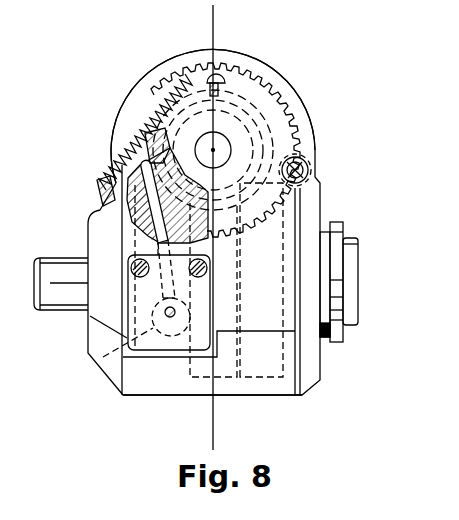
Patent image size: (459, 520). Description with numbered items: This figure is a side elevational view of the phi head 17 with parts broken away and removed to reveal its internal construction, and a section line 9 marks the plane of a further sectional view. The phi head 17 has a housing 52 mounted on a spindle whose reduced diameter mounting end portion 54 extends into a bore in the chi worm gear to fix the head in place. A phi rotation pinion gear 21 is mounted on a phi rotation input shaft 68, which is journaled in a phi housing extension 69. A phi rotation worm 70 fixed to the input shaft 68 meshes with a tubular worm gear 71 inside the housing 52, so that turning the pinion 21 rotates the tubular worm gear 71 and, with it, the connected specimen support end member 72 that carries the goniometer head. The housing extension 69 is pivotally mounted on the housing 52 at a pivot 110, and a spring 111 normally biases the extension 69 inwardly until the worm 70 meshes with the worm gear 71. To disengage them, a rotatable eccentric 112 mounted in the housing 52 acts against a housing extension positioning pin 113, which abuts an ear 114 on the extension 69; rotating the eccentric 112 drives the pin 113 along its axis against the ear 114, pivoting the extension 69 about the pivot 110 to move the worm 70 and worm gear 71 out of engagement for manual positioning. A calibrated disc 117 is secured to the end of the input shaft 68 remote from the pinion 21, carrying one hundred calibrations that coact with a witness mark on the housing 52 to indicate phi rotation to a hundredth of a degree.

The section line 9- 9 is at (209, 12).
The phi head 17 is at (84, 340).
The phi rotation pinion gear 21 is at (277, 92).
The phi housing 52 is at (244, 396).
The reduced diameter mounting end portion 54 is at (57, 311).
The phi rotation input shaft 68 is at (229, 142).
The phi housing extension 69 is at (147, 120).
The phi rotation worm 70 is at (150, 186).
The tubular worm gear 71 is at (150, 226).
The specimen support end member 72 is at (349, 237).
The pivot 110 is at (303, 162).
The spring 111 is at (127, 157).
The rotatable eccentric 112 is at (127, 349).
The housing extension positioning pin 113 is at (140, 183).
The ear 114 is at (140, 143).
The calibrated disc 117 is at (262, 63).